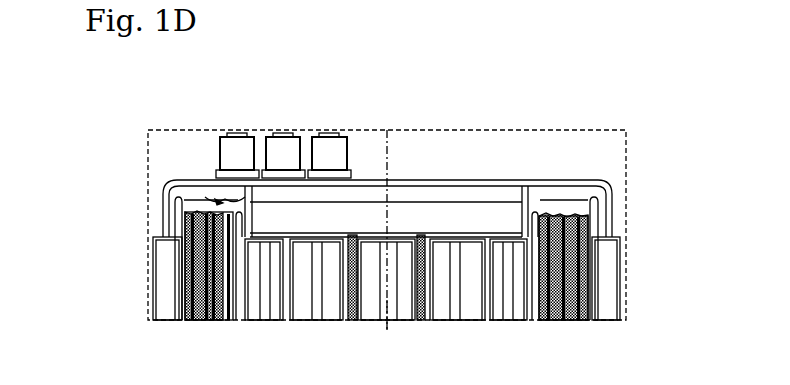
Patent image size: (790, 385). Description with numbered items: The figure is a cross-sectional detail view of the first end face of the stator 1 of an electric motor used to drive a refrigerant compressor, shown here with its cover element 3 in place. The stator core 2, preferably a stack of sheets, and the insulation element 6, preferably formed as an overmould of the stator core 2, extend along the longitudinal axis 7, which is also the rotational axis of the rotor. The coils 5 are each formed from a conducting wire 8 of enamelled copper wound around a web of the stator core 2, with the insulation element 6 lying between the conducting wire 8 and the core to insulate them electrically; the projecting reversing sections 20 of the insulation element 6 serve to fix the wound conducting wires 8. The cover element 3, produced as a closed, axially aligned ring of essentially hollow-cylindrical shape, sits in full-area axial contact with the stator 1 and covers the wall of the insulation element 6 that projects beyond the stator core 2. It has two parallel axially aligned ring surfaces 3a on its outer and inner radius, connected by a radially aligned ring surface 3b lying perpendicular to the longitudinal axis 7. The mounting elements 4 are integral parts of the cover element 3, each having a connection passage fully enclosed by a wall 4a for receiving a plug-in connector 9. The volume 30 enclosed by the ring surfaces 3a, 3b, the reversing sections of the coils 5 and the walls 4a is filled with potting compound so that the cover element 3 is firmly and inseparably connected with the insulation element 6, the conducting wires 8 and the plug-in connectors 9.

The stator 1 is at (637, 104).
The stator core 2 is at (167, 273).
The cover element 3 is at (409, 170).
The axially aligned ring surface 3a is at (520, 219).
The radially aligned ring surface 3b is at (433, 178).
The mounting element 4 is at (280, 150).
The wall 4a is at (196, 179).
The coil 5 is at (182, 228).
The insulation element 6 is at (164, 196).
The longitudinal axis 7 is at (387, 328).
The conducting wire 8 is at (606, 118).
The plug-in connector 9 is at (228, 150).
The reversing section 20 is at (245, 187).
The volume 30 is at (220, 201).